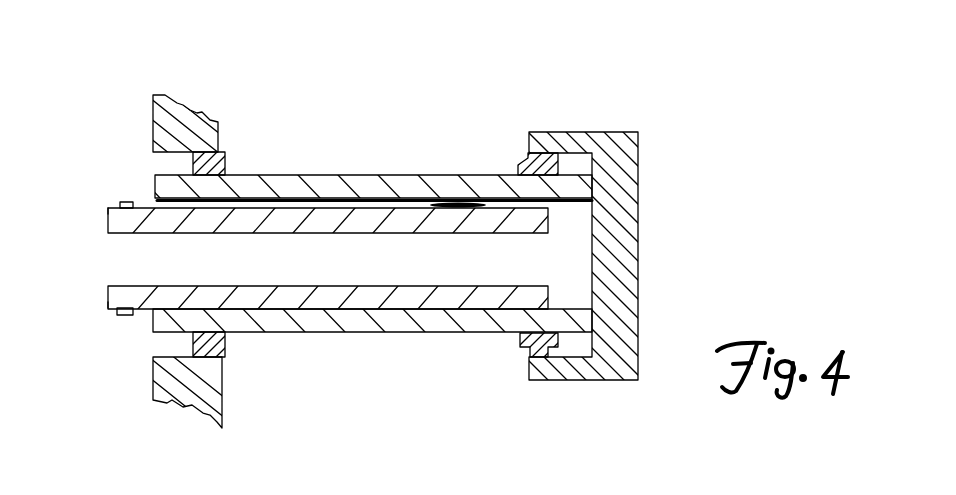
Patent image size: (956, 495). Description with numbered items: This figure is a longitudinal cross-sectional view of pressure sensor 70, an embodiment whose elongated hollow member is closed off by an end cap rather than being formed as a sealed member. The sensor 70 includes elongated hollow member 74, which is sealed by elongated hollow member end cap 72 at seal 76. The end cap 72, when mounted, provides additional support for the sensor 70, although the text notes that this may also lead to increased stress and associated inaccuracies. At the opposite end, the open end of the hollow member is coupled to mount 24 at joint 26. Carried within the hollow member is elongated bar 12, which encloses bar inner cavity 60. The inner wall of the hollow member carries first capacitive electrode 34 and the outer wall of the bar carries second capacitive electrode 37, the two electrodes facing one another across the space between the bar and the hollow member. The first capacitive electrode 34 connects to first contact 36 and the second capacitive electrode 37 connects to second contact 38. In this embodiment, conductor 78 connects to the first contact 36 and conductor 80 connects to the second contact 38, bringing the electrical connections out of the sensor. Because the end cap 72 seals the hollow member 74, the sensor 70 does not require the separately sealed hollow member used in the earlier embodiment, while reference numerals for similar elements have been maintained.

The elongated bar 12 is at (353, 226).
The mount 24 is at (153, 122).
The joint 26 is at (223, 337).
The first capacitive electrode 34 is at (448, 199).
The first contact 36 is at (110, 313).
The second capacitive electrode 37 is at (485, 208).
The second contact 38 is at (107, 205).
The bar inner cavity 60 is at (317, 273).
The pressure sensor 70 is at (406, 109).
The elongated hollow member end cap 72 is at (549, 132).
The elongated hollow member 74 is at (337, 176).
The seal 76 is at (530, 347).
The conductor 78 is at (113, 340).
The conductor 80 is at (112, 198).